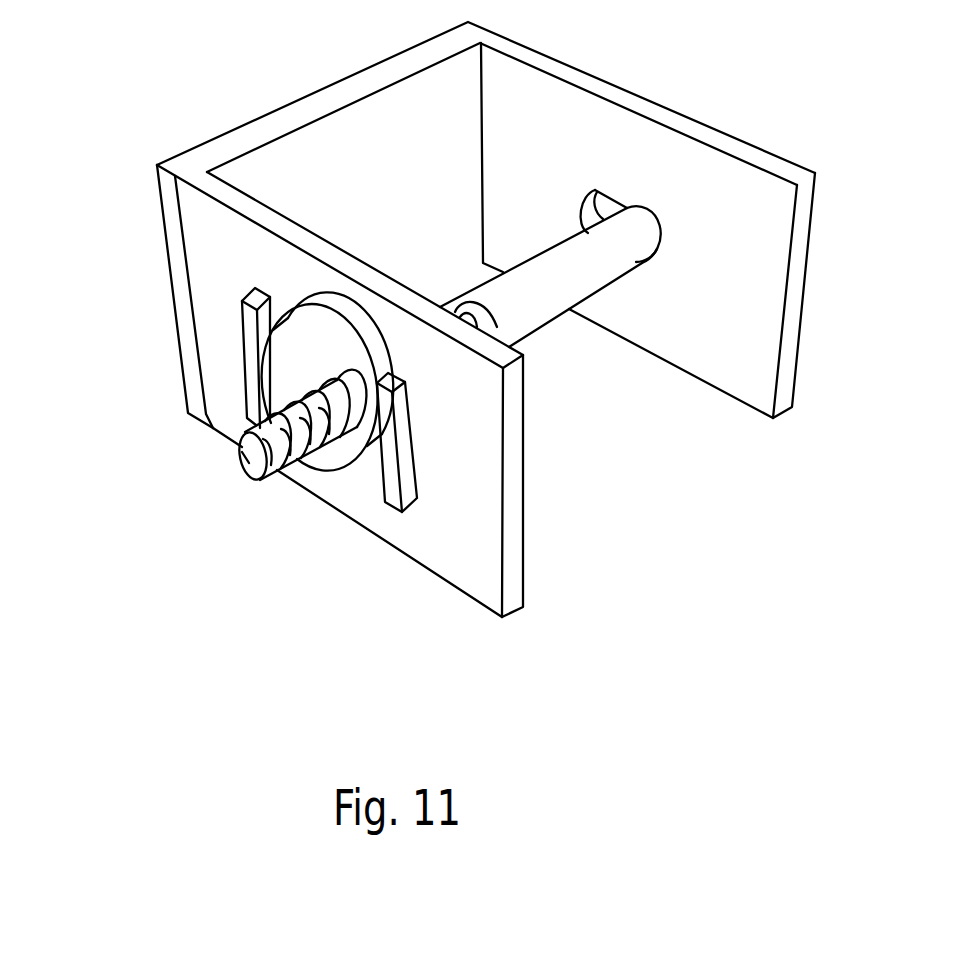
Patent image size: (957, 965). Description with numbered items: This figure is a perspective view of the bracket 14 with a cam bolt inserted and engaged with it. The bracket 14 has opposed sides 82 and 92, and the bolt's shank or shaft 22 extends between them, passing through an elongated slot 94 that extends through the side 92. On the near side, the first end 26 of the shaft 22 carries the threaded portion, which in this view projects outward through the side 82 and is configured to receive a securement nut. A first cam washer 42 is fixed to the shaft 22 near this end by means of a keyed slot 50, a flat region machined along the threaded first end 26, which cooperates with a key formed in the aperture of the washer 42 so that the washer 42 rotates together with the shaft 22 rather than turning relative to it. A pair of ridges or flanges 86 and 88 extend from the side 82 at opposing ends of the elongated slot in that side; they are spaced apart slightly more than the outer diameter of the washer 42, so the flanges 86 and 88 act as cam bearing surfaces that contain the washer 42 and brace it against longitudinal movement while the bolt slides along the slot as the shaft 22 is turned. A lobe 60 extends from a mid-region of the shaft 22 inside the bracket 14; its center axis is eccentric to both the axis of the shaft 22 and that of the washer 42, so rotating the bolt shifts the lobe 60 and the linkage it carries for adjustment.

The bracket 14 is at (332, 83).
The shaft 22 is at (617, 247).
The first end 26 is at (260, 465).
The first cam washer 42 is at (300, 352).
The keyed slot 50 is at (237, 445).
The lobe 60 is at (535, 302).
The side 82 is at (458, 543).
The flange 86 is at (250, 322).
The flange 88 is at (387, 480).
The side 92 is at (742, 367).
The slot 94 is at (612, 208).